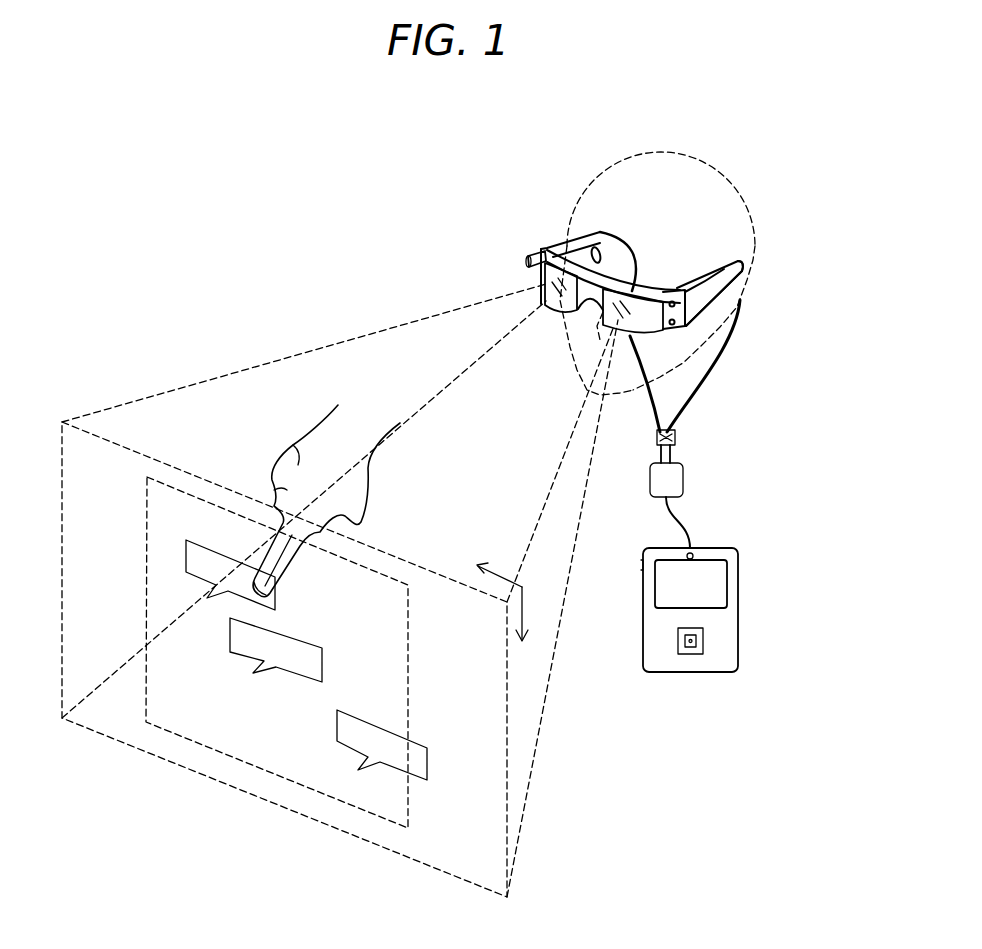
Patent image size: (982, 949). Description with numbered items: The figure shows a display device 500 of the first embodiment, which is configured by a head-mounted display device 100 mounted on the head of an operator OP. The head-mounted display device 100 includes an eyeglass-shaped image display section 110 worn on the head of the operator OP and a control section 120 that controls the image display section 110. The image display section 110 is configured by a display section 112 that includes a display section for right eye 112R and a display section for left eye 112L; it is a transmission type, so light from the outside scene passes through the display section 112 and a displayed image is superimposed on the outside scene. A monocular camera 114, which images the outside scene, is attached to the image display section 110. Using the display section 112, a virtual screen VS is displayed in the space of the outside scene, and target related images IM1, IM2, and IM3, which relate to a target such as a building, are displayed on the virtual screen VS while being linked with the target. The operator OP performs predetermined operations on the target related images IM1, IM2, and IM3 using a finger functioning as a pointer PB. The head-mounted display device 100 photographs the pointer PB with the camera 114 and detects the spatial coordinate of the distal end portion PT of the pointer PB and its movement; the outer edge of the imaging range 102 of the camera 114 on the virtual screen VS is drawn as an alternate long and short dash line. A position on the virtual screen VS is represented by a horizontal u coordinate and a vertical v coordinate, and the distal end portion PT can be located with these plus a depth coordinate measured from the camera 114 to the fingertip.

The operator OP is at (684, 148).
The image display section 110 is at (543, 235).
The camera 114 is at (535, 255).
The display section for right eye 112R is at (542, 300).
The display section for left eye 112L is at (592, 322).
The display section 112 is at (556, 450).
The head-mounted display device 100 is at (757, 280).
The display device 500 is at (762, 298).
The control section 120 is at (717, 546).
The virtual screen VS is at (145, 753).
The imaging range 102 is at (248, 765).
The u coordinate u is at (489, 571).
The v coordinate v is at (522, 627).
The target related image IM1 is at (187, 556).
The target related image IM2 is at (242, 655).
The target related image IM3 is at (418, 745).
The pointer PB is at (297, 465).
The distal end portion PT is at (268, 594).